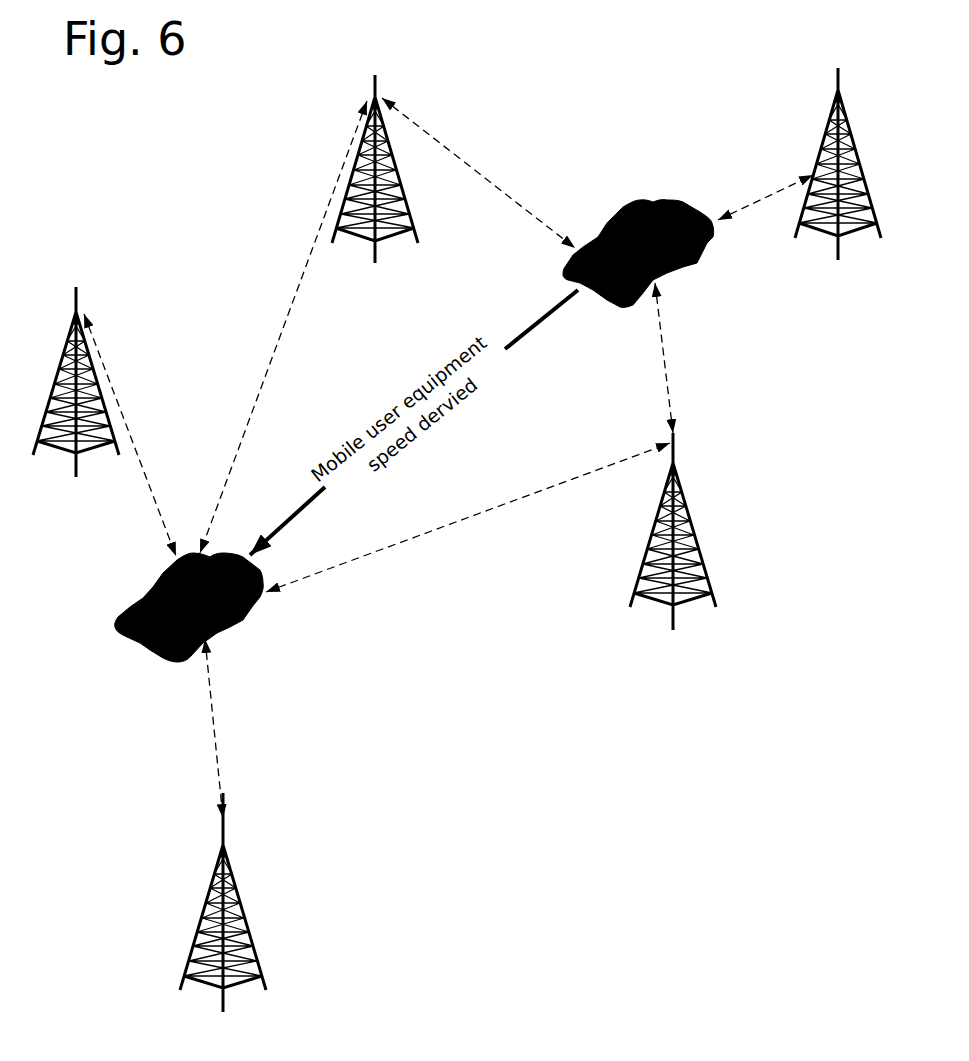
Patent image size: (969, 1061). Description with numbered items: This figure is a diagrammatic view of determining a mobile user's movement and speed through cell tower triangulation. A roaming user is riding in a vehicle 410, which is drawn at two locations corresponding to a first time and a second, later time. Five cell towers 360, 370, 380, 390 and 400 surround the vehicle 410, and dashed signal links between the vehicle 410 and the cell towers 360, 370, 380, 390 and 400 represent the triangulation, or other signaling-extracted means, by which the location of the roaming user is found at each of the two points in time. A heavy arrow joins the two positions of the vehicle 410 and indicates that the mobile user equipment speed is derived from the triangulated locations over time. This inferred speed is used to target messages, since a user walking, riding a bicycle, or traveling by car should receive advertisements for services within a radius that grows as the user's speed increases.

The cell tower 360 is at (375, 258).
The cell tower 370 is at (843, 111).
The cell tower 380 is at (707, 562).
The cell tower 390 is at (63, 358).
The cell tower 400 is at (242, 915).
The vehicle 410 is at (650, 198).